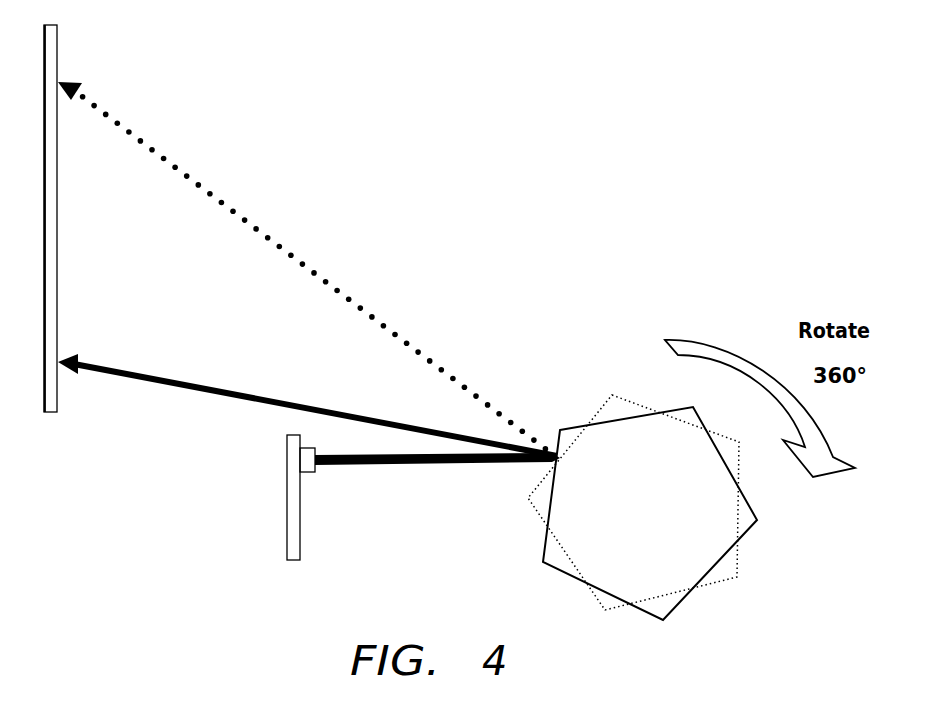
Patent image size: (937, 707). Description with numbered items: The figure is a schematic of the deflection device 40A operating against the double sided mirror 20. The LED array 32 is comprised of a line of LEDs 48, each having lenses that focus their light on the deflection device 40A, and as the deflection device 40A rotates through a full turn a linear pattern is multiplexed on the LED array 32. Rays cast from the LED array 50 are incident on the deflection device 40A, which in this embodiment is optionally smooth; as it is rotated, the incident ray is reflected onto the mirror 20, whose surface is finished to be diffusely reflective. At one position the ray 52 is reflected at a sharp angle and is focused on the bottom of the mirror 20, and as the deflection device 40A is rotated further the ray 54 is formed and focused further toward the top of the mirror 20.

The double sided mirror 20 is at (43, 139).
The LED array 32 is at (287, 500).
The LEDs 48 is at (313, 472).
The rays cast from the LED array 50 is at (390, 466).
The ray 52 is at (205, 383).
The ray 54 is at (252, 225).
The deflection device 40A is at (753, 507).